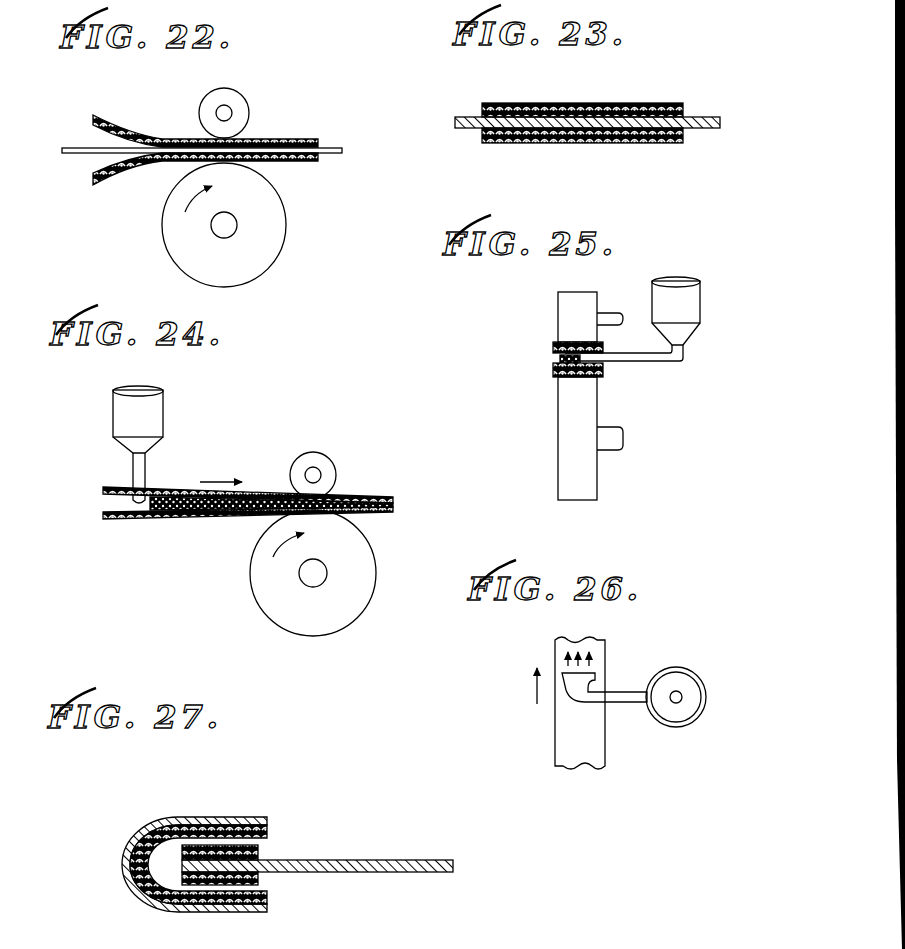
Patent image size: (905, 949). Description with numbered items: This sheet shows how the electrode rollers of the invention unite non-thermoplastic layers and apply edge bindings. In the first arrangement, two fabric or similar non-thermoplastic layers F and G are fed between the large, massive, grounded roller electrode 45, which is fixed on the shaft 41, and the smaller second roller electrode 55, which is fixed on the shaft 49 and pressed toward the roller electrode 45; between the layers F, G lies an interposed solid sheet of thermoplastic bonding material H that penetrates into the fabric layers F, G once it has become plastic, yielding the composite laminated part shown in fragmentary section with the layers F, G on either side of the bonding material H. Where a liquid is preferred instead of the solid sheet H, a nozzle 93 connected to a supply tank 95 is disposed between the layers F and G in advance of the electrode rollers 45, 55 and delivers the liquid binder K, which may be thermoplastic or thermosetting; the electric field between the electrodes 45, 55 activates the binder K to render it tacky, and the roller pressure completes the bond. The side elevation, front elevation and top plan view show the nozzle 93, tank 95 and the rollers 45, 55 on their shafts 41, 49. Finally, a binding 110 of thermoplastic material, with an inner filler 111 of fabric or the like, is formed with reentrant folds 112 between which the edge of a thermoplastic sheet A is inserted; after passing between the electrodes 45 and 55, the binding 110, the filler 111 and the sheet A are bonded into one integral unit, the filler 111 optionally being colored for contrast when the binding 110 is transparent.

In FIG. 22, the roller electrode 45 is at (274, 228).
In FIG. 24, the roller electrode 45 is at (370, 562).
In FIG. 25, the roller electrode 45 is at (590, 470).
In FIG. 22, the second roller electrode 55 is at (246, 101).
In FIG. 24, the second roller electrode 55 is at (334, 463).
In FIG. 25, the second roller electrode 55 is at (560, 301).
In FIG. 25, the shaft 49 is at (611, 312).
In FIG. 25, the shaft 41 is at (620, 438).
In FIG. 24, the nozzle 93 is at (148, 520).
In FIG. 25, the nozzle 93 is at (628, 363).
In FIG. 26, the nozzle 93 is at (594, 680).
In FIG. 24, the supply tank 95 is at (163, 401).
In FIG. 25, the supply tank 95 is at (700, 297).
In FIG. 26, the supply tank 95 is at (702, 681).
In FIG. 27, the binding 110 is at (148, 822).
In FIG. 27, the filler 111 is at (195, 830).
In FIG. 27, the reentrant folds 112 is at (265, 845).
In FIG. 27, the thermoplastic sheet A is at (342, 860).
In FIG. 22, the non-thermoplastic layer F is at (106, 124).
In FIG. 23, the non-thermoplastic layer F is at (722, 97).
In FIG. 24, the non-thermoplastic layer F is at (108, 485).
In FIG. 25, the non-thermoplastic layer F is at (553, 346).
In FIG. 22, the non-thermoplastic layer G is at (122, 178).
In FIG. 23, the non-thermoplastic layer G is at (632, 126).
In FIG. 24, the non-thermoplastic layer G is at (108, 520).
In FIG. 25, the non-thermoplastic layer G is at (553, 372).
In FIG. 26, the non-thermoplastic layer G is at (558, 747).
In FIG. 22, the thermoplastic bonding material H is at (74, 160).
In FIG. 23, the thermoplastic bonding material H is at (629, 121).
In FIG. 24, the liquid binder K is at (178, 495).
In FIG. 25, the liquid binder K is at (560, 359).